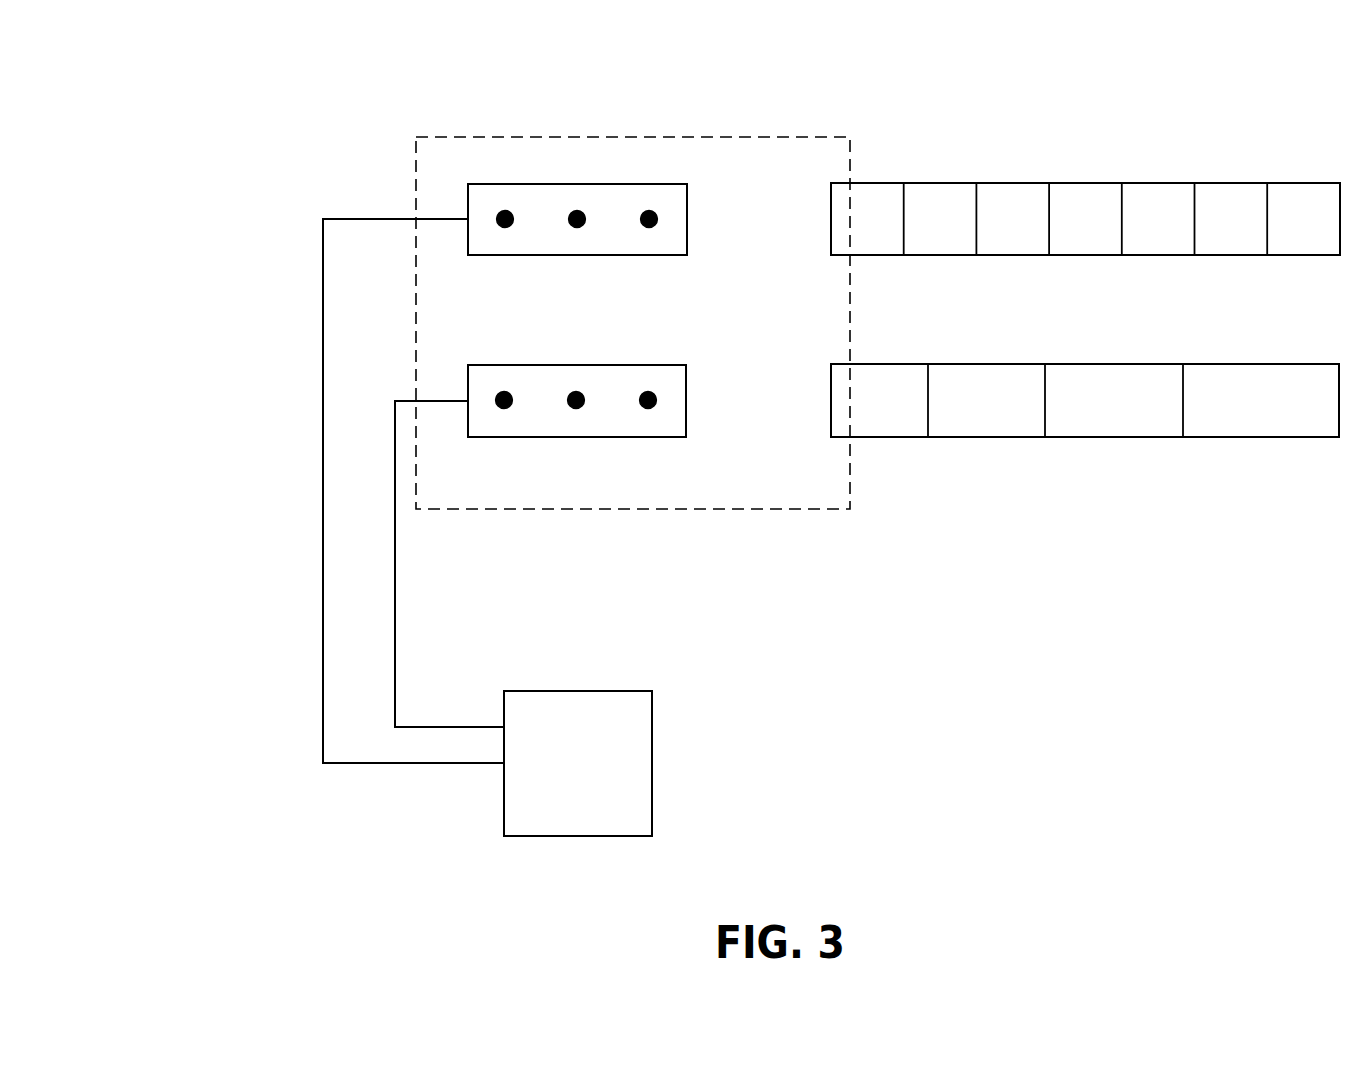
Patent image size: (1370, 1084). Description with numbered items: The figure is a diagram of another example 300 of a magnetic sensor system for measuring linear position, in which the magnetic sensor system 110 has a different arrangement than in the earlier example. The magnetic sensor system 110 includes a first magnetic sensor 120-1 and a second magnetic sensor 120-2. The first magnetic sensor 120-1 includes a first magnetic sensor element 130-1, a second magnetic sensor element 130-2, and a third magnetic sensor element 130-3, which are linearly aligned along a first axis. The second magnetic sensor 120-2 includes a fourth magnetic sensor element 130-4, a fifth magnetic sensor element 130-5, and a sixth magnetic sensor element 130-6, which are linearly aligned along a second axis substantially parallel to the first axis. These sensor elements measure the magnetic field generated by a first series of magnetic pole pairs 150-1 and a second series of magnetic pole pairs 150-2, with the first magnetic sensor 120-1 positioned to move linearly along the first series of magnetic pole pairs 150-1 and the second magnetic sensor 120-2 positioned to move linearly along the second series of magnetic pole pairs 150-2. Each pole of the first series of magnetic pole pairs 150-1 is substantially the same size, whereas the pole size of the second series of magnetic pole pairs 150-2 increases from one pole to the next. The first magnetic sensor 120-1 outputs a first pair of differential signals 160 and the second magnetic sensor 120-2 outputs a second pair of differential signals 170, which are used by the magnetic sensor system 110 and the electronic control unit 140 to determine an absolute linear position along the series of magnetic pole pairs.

The example magnetic sensor system 300 is at (272, 68).
The magnetic sensor system 110 is at (470, 137).
The first magnetic sensor 120-1 is at (779, 231).
The second magnetic sensor 120-2 is at (779, 412).
The first magnetic sensor element 130-1 is at (505, 227).
The second magnetic sensor element 130-2 is at (577, 227).
The third magnetic sensor element 130-3 is at (649, 227).
The fourth magnetic sensor element 130-4 is at (504, 408).
The fifth magnetic sensor element 130-5 is at (576, 408).
The sixth magnetic sensor element 130-6 is at (648, 408).
The first series of magnetic pole pairs 150-1 is at (1063, 150).
The second series of magnetic pole pairs 150-2 is at (1063, 330).
The first pair of differential signals 160 is at (303, 545).
The second pair of differential signals 170 is at (416, 545).
The electronic control unit (ECU) 140 is at (557, 789).